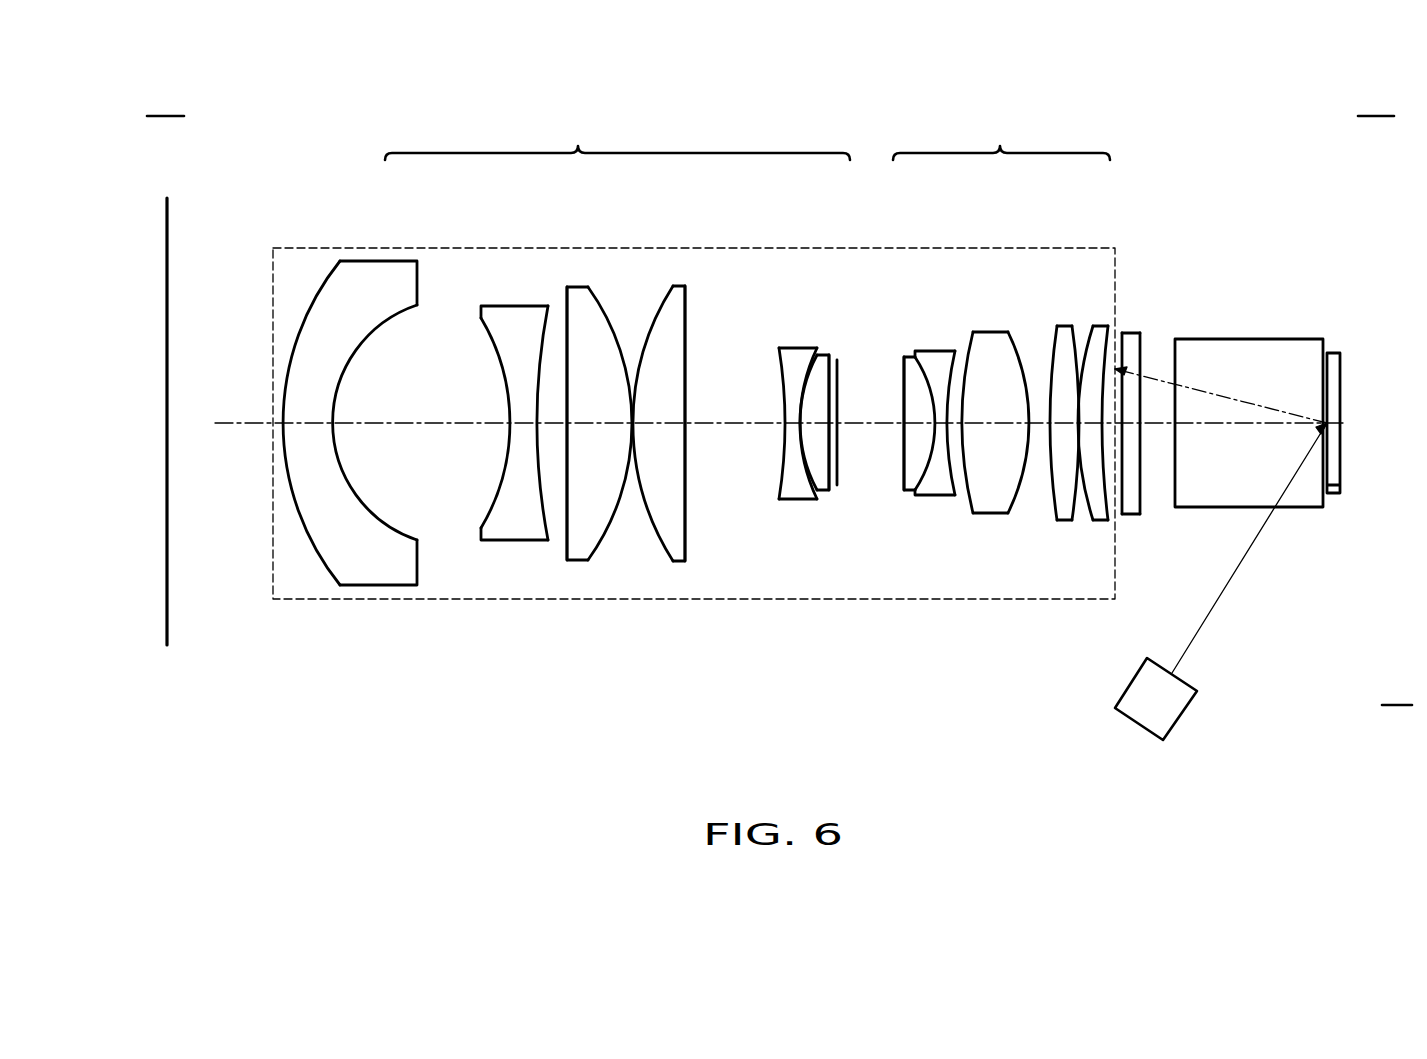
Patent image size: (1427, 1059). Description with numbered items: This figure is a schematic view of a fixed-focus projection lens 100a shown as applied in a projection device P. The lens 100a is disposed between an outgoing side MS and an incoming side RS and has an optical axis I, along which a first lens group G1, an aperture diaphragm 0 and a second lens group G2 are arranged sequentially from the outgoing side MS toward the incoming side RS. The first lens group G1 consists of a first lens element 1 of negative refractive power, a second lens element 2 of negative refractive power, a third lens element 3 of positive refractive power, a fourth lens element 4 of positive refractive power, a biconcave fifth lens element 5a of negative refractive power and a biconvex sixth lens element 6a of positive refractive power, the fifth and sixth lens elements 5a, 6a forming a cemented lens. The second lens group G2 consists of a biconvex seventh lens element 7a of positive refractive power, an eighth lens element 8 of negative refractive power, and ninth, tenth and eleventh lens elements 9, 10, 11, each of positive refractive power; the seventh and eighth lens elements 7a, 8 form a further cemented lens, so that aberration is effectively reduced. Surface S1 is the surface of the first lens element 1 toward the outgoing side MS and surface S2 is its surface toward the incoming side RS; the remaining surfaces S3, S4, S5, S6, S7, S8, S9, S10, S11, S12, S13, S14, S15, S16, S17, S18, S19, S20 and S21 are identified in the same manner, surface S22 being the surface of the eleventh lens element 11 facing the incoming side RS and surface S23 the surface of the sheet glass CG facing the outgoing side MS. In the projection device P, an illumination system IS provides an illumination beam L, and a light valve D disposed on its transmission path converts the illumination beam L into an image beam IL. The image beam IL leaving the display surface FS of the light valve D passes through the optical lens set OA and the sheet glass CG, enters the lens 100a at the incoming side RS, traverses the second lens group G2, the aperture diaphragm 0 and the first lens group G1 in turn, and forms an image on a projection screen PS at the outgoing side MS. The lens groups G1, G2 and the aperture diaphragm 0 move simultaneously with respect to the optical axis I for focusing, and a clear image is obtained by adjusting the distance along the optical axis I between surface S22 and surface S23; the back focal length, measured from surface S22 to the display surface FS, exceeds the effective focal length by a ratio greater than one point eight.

The fixed-focus projection lens 100a is at (273, 277).
The outgoing side MS is at (165, 95).
The incoming side RS is at (1376, 95).
The projection screen PS is at (167, 232).
The optical axis I is at (232, 420).
The first lens group G1 is at (617, 135).
The second lens group G2 is at (1001, 135).
The first lens element 1 is at (355, 425).
The second lens element 2 is at (498, 425).
The third lens element 3 is at (586, 425).
The fourth lens element 4 is at (662, 425).
The fifth lens element 5a is at (766, 425).
The sixth lens element 6a is at (824, 378).
The aperture diaphragm 0 is at (838, 360).
The seventh lens element 7a is at (882, 425).
The eighth lens element 8 is at (929, 378).
The ninth lens element 9 is at (980, 448).
The tenth lens element 10 is at (1043, 462).
The eleventh lens element 11 is at (1090, 462).
The sheet glass CG is at (1143, 444).
The optical lens set OA is at (1272, 360).
The display surface FS is at (1340, 380).
The light valve D is at (1333, 483).
The image beam IL is at (1160, 380).
The illumination beam L is at (1218, 601).
The illumination system IS is at (1167, 710).
The projection device P is at (1397, 685).
The surface S1 is at (328, 572).
The surface S2 is at (407, 528).
The surface S3 is at (487, 510).
The surface S4 is at (550, 525).
The surface S5 is at (567, 550).
The surface S6 is at (602, 538).
The surface S7 is at (667, 550).
The surface S8 is at (688, 538).
The surface S9 is at (782, 483).
The surface S10 is at (808, 473).
The surface S11 is at (812, 472).
The surface S12 is at (830, 483).
The surface S13 is at (903, 468).
The surface S14 is at (917, 478).
The surface S15 is at (928, 476).
The surface S16 is at (960, 478).
The surface S17 is at (966, 490).
The surface S18 is at (1017, 497).
The surface S19 is at (1055, 512).
The surface S20 is at (1073, 518).
The surface S21 is at (1093, 518).
The surface S22 is at (1118, 513).
The surface S23 is at (1136, 512).